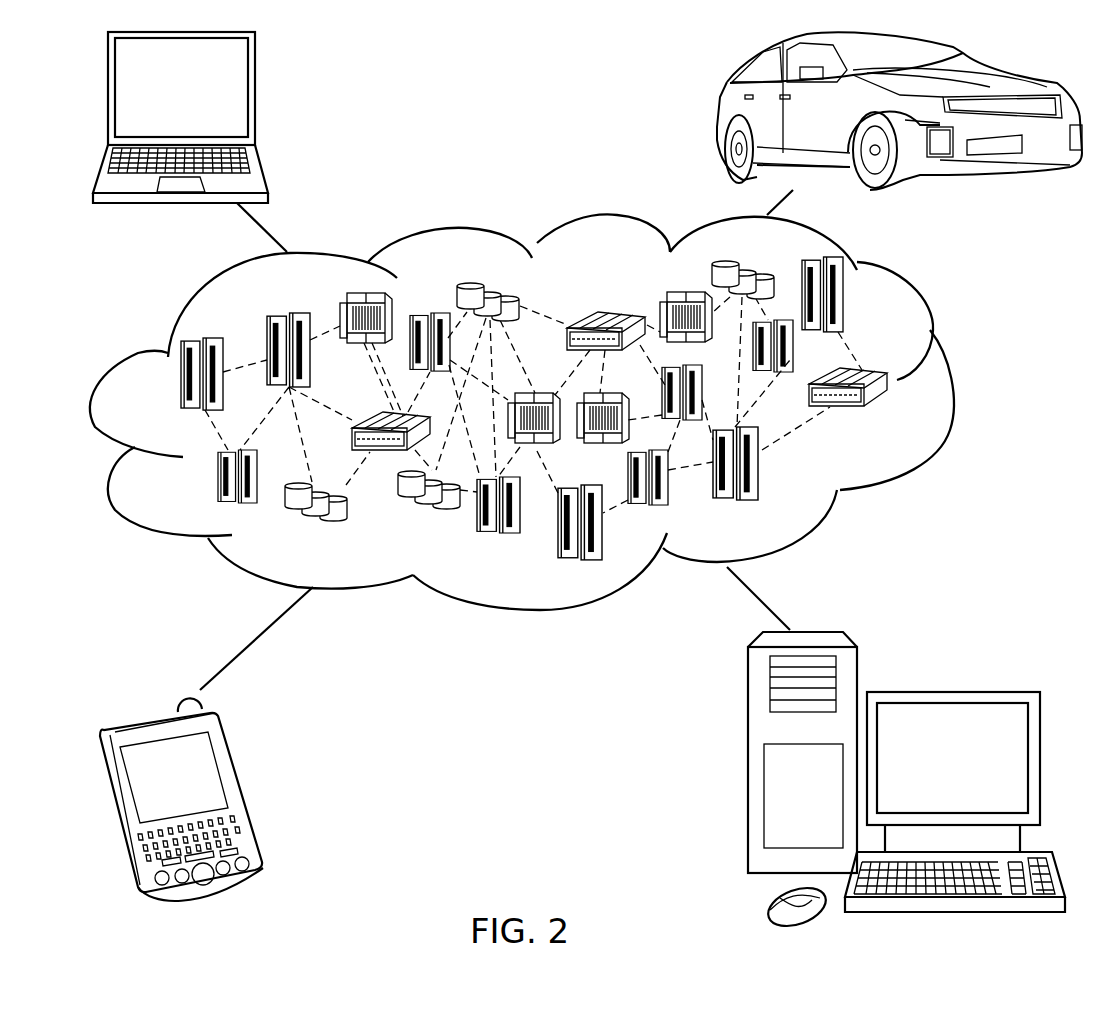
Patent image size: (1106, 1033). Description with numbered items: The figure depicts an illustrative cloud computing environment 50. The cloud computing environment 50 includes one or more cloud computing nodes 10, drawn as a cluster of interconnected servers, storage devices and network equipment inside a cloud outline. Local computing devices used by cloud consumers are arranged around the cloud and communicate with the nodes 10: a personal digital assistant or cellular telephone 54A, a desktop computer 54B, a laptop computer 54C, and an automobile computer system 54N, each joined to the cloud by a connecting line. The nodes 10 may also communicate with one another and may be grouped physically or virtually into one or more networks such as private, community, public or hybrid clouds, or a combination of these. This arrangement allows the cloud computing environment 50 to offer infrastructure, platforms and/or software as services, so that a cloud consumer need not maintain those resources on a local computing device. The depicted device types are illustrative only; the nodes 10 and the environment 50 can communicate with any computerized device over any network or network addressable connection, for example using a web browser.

The cloud computing node 10 is at (900, 418).
The cloud computing environment 50 is at (952, 383).
The personal digital assistant or cellular telephone 54A is at (242, 788).
The desktop computer 54B is at (948, 692).
The laptop computer 54C is at (254, 95).
The automobile computer system 54N is at (718, 112).